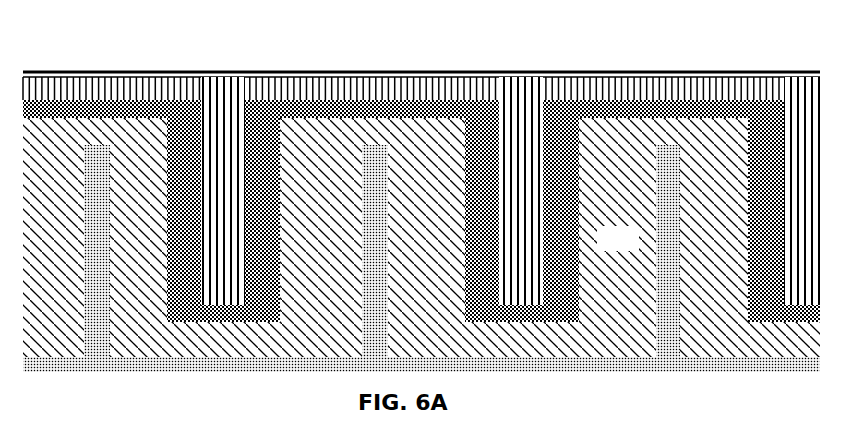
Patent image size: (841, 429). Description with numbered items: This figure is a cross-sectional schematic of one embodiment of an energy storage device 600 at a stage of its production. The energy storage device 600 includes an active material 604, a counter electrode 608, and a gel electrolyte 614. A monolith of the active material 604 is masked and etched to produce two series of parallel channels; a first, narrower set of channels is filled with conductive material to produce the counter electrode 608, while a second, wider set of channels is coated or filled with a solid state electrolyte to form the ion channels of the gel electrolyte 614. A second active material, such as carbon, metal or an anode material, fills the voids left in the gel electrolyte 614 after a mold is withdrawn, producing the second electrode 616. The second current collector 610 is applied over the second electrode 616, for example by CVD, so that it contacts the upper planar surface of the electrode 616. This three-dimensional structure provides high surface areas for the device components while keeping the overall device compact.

The energy storage device 600 is at (421, 211).
The active material 604 is at (632, 244).
The counter electrode 608 is at (95, 347).
The second current collector 610 is at (308, 72).
The gel electrolyte 614 is at (478, 118).
The second electrode 616 is at (217, 112).